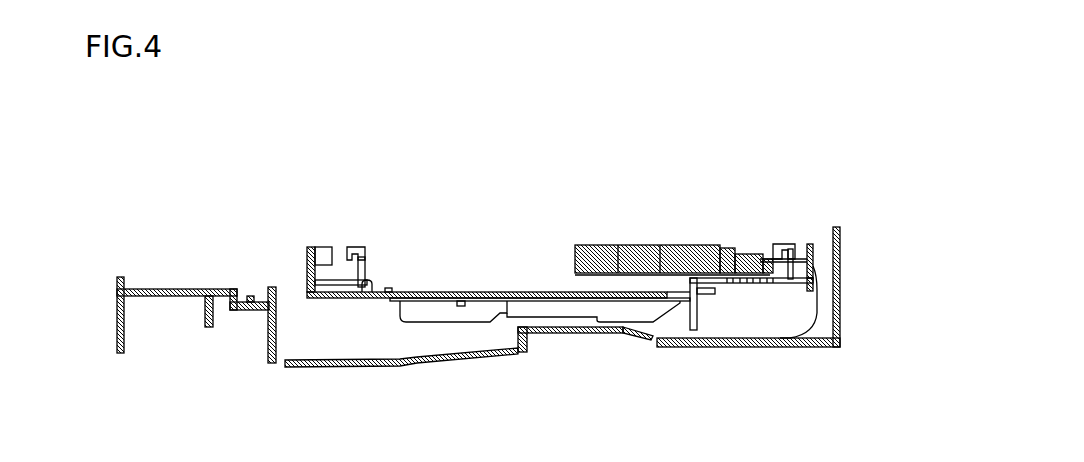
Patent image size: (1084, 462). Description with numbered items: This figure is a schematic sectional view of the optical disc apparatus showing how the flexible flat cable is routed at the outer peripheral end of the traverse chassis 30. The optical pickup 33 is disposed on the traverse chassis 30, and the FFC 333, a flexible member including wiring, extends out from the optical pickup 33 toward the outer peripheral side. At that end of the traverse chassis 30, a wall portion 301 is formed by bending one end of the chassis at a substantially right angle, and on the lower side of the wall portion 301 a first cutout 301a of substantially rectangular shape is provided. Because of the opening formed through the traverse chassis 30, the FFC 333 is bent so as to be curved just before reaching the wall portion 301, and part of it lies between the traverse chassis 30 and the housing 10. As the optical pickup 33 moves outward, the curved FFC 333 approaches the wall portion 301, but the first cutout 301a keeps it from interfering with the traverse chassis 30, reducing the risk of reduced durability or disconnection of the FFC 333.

The housing 10 is at (803, 347).
The traverse chassis 30 is at (530, 292).
The optical pickup 33 is at (673, 243).
The FFC 333 is at (810, 322).
The wall portion 301 is at (815, 258).
The first cutout 301a is at (815, 278).